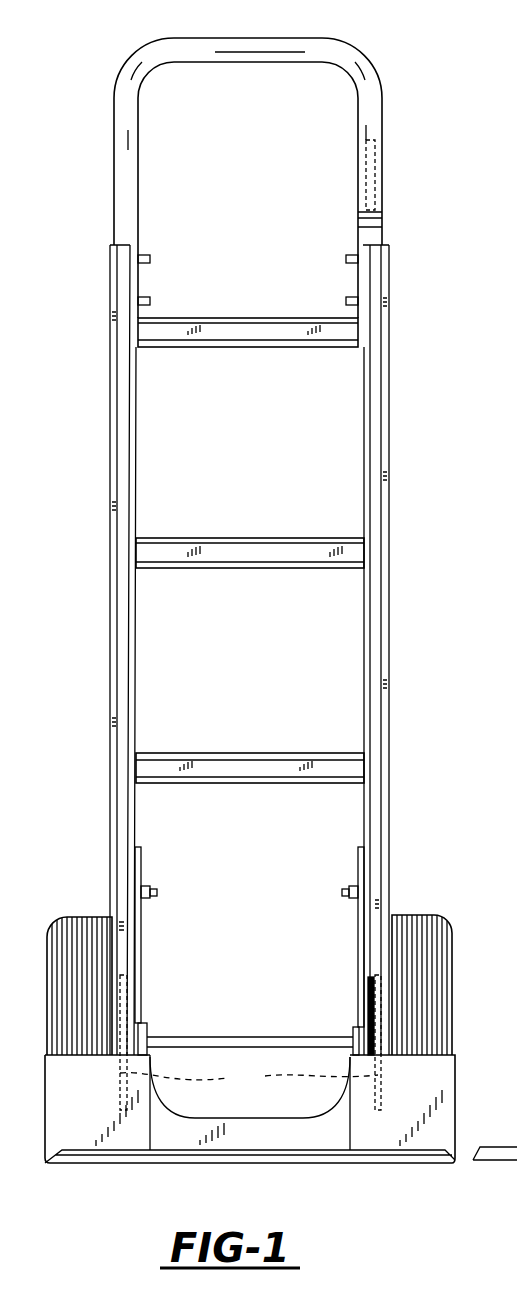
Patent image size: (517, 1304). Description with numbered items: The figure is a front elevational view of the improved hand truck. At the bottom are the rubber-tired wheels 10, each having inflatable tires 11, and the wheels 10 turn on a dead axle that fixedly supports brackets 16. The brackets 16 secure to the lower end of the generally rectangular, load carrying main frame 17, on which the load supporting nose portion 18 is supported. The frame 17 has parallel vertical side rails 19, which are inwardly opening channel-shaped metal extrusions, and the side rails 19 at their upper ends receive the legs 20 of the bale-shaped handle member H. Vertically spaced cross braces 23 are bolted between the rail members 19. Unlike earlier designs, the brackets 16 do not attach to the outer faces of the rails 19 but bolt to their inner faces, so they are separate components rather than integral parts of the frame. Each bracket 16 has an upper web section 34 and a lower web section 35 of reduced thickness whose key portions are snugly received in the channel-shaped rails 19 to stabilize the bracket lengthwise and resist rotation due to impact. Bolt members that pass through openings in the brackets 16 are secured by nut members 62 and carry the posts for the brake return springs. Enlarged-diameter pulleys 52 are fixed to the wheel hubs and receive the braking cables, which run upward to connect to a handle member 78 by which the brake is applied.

The wheels 10 is at (76, 904).
The inflatable tires 11 is at (100, 915).
The brackets 16 is at (348, 862).
The main frame 17 is at (105, 392).
The load supporting nose portion 18 is at (134, 1163).
The side rails 19 is at (133, 450).
The legs 20 is at (134, 147).
The cross braces 23 is at (275, 550).
The upper web section 34 is at (142, 877).
The lower web section 35 is at (147, 1015).
The pulleys 52 is at (249, 1079).
The nut members 62 is at (151, 900).
The handle member 78 is at (376, 163).
The handle member H is at (267, 72).